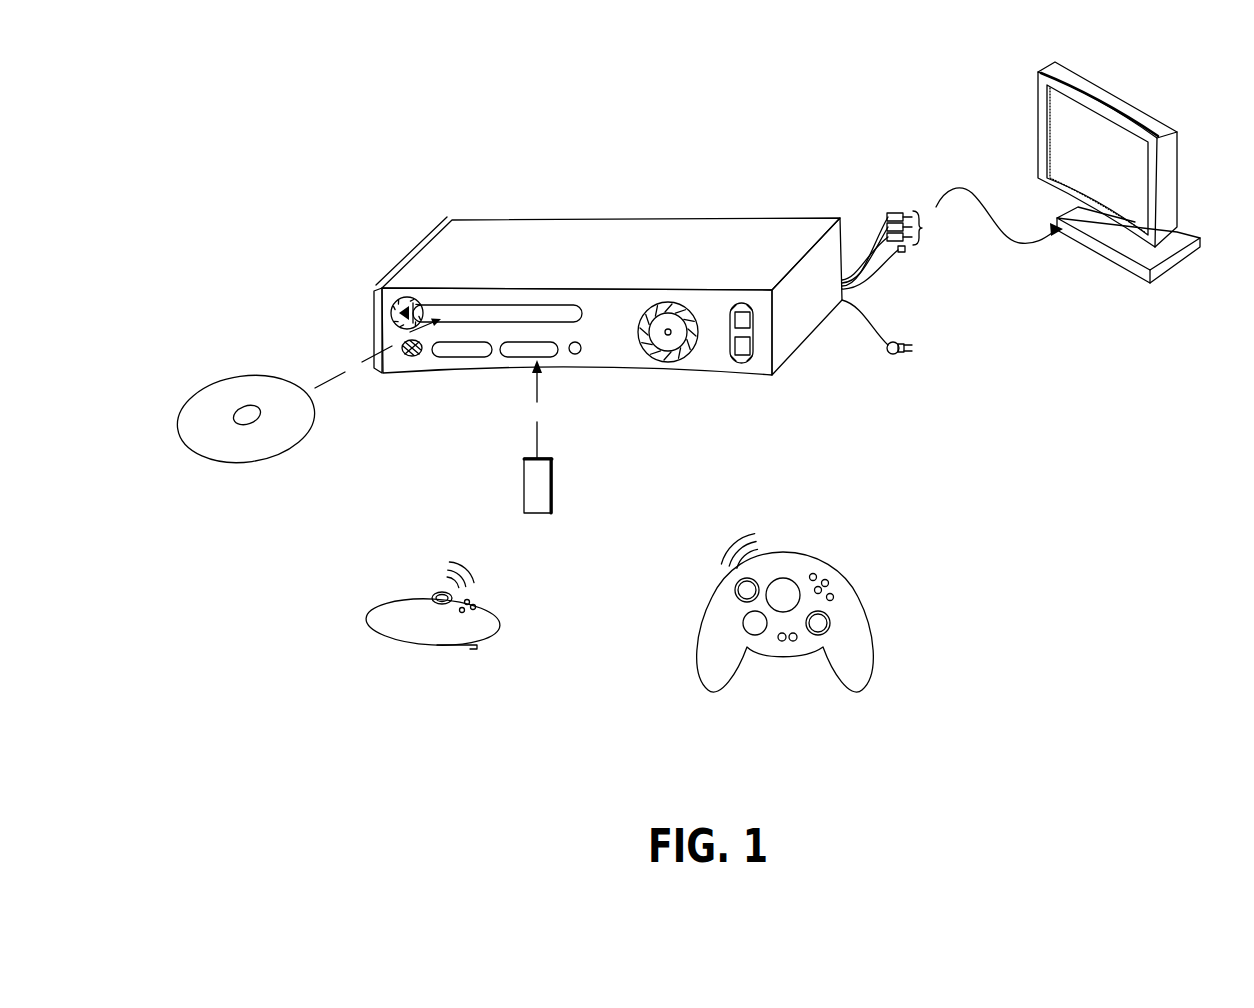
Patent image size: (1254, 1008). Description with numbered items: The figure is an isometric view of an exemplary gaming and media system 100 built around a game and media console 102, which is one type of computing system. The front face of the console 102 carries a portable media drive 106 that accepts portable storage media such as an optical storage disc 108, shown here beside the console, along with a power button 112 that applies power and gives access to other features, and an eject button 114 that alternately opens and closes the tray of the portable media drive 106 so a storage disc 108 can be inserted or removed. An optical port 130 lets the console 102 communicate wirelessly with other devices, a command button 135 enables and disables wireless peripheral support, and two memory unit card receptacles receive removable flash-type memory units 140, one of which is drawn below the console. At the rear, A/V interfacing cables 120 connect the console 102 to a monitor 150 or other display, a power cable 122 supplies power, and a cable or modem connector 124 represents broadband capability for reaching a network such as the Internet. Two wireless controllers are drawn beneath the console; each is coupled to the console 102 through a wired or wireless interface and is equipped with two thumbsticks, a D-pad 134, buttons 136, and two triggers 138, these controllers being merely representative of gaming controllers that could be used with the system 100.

The gaming and media system 100 is at (641, 176).
The game and media console 102 is at (488, 228).
The portable media drive 106 is at (507, 303).
The optical storage disc 108 is at (255, 462).
The power button 112 is at (668, 363).
The eject button 114 is at (398, 311).
The A/V interfacing cables 120 is at (893, 213).
The power cable 122 is at (890, 353).
The cable or modem connector 124 is at (902, 252).
The optical port 130 is at (410, 358).
The D-pad 134 is at (742, 623).
The command button 135 is at (576, 355).
The buttons 136 is at (827, 583).
The triggers 138 is at (472, 660).
The removable flash-type memory unit 140 is at (540, 513).
The monitor 150 is at (1038, 125).